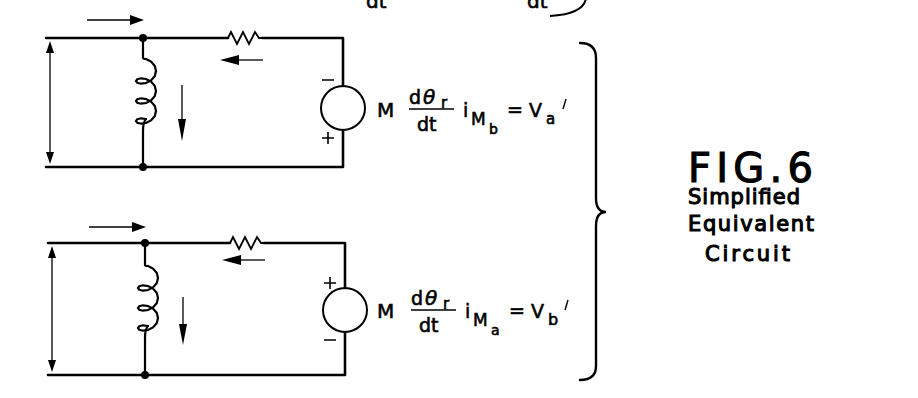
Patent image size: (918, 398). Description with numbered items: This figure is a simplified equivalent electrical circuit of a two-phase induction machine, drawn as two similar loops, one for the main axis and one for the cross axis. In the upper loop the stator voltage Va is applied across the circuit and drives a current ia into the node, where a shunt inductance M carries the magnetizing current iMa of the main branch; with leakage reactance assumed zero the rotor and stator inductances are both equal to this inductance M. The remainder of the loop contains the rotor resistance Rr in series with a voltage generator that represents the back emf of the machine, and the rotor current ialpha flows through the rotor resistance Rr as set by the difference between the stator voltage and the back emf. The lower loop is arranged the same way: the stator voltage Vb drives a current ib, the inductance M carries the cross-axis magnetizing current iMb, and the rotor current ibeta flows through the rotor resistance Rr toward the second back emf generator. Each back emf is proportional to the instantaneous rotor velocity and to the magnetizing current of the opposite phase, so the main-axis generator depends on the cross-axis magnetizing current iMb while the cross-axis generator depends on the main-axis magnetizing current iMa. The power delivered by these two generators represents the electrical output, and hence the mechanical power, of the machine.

The inductance M is at (132, 206).
The rotor resistance Rr is at (246, 128).
The stator voltage Va is at (52, 102).
The stator voltage Vb is at (56, 309).
The main-axis current ia is at (103, 25).
The cross-axis current ib is at (105, 226).
The magnetizing current iMa is at (182, 98).
The magnetizing current iMb is at (184, 307).
The main-axis rotor current ialpha is at (241, 75).
The cross-axis rotor current ibeta is at (243, 277).